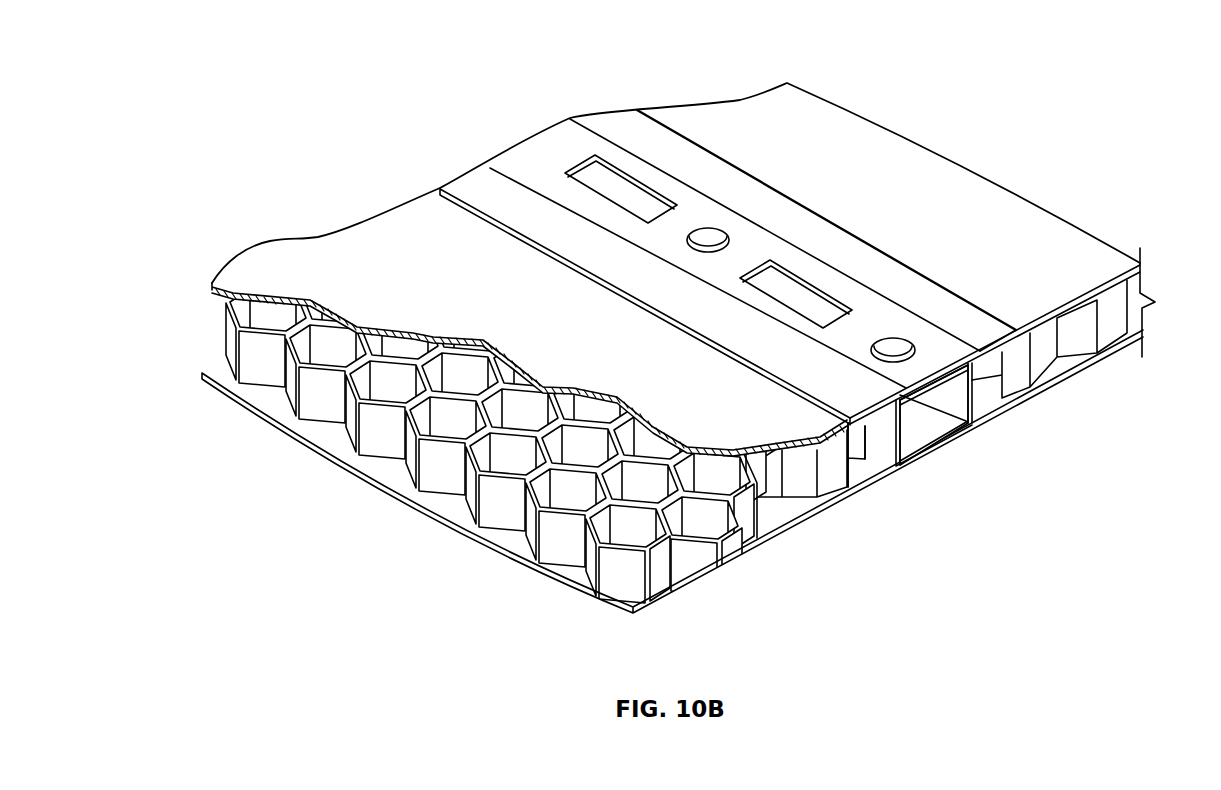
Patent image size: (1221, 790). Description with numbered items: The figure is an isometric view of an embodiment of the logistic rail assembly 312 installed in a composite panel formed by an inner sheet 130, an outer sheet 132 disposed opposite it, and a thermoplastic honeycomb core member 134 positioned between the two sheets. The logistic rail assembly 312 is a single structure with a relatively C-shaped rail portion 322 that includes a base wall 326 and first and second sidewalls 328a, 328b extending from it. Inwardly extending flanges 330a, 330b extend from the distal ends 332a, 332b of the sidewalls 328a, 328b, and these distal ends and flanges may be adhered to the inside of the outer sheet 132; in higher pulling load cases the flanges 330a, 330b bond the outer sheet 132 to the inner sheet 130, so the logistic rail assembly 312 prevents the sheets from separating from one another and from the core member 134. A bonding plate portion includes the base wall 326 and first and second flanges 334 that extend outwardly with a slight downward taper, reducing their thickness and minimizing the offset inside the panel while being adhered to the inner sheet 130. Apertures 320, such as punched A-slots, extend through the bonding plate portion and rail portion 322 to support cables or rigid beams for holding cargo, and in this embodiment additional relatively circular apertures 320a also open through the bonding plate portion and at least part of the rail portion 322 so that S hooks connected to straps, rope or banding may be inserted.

The inner sheet 130 is at (383, 247).
The outer sheet 132 is at (456, 555).
The core member 134 is at (225, 332).
The logistic rail assembly 312 is at (790, 225).
The apertures 320 is at (614, 156).
The apertures 320a is at (715, 236).
The base wall 326 is at (853, 380).
The first and second flanges 334 is at (982, 330).
The rail portion 322 is at (1006, 484).
The first sidewall 328a is at (885, 437).
The second sidewall 328b is at (977, 378).
The flange 330a is at (915, 444).
The flange 330b is at (961, 424).
The distal end 332a is at (905, 447).
The distal end 332b is at (968, 432).